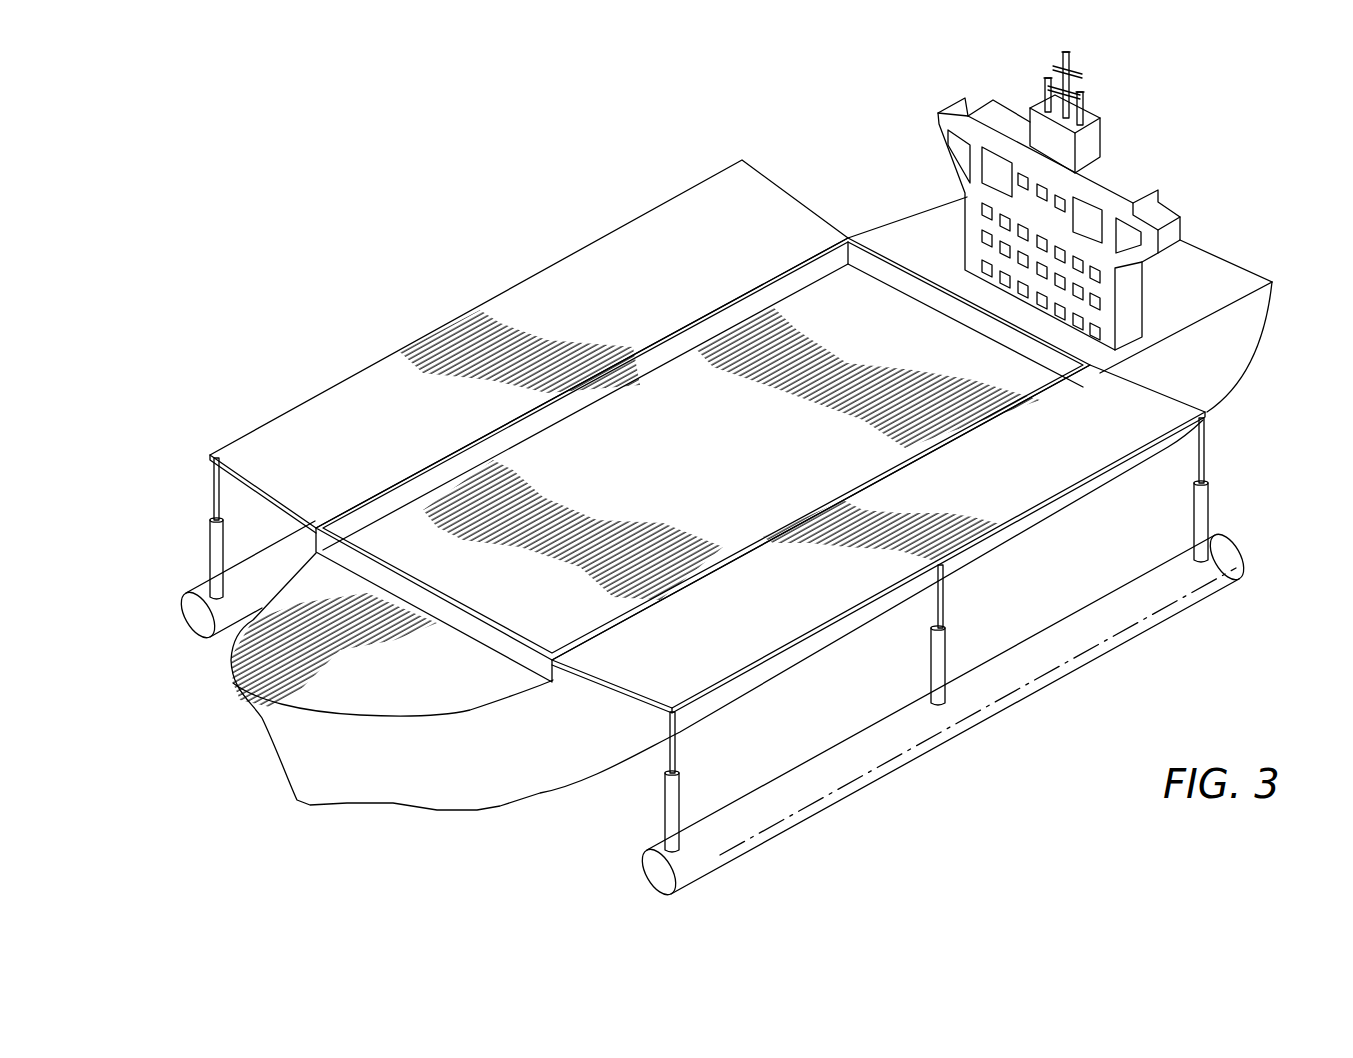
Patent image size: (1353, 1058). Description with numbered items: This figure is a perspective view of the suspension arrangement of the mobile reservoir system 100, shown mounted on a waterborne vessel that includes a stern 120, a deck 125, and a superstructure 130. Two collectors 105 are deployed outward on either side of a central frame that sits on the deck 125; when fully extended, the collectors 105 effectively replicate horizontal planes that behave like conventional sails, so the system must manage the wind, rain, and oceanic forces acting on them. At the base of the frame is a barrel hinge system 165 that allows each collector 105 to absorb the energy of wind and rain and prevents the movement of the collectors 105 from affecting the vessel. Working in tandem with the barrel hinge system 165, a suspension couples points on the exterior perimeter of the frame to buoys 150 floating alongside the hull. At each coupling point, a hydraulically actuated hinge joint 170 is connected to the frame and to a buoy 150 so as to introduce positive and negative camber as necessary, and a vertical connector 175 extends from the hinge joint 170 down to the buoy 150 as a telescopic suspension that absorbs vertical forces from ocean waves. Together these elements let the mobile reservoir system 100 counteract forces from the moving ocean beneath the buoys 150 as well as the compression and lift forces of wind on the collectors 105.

The mobile reservoir system 100 is at (357, 237).
The collector 105 is at (632, 263).
The stern 120 is at (1213, 193).
The deck 125 is at (270, 678).
The superstructure 130 is at (975, 154).
The buoy 150 is at (192, 602).
The barrel hinge system 165 is at (315, 530).
The hydraulically actuated hinge joint 170 is at (210, 456).
The vertical connector 175 is at (1203, 450).